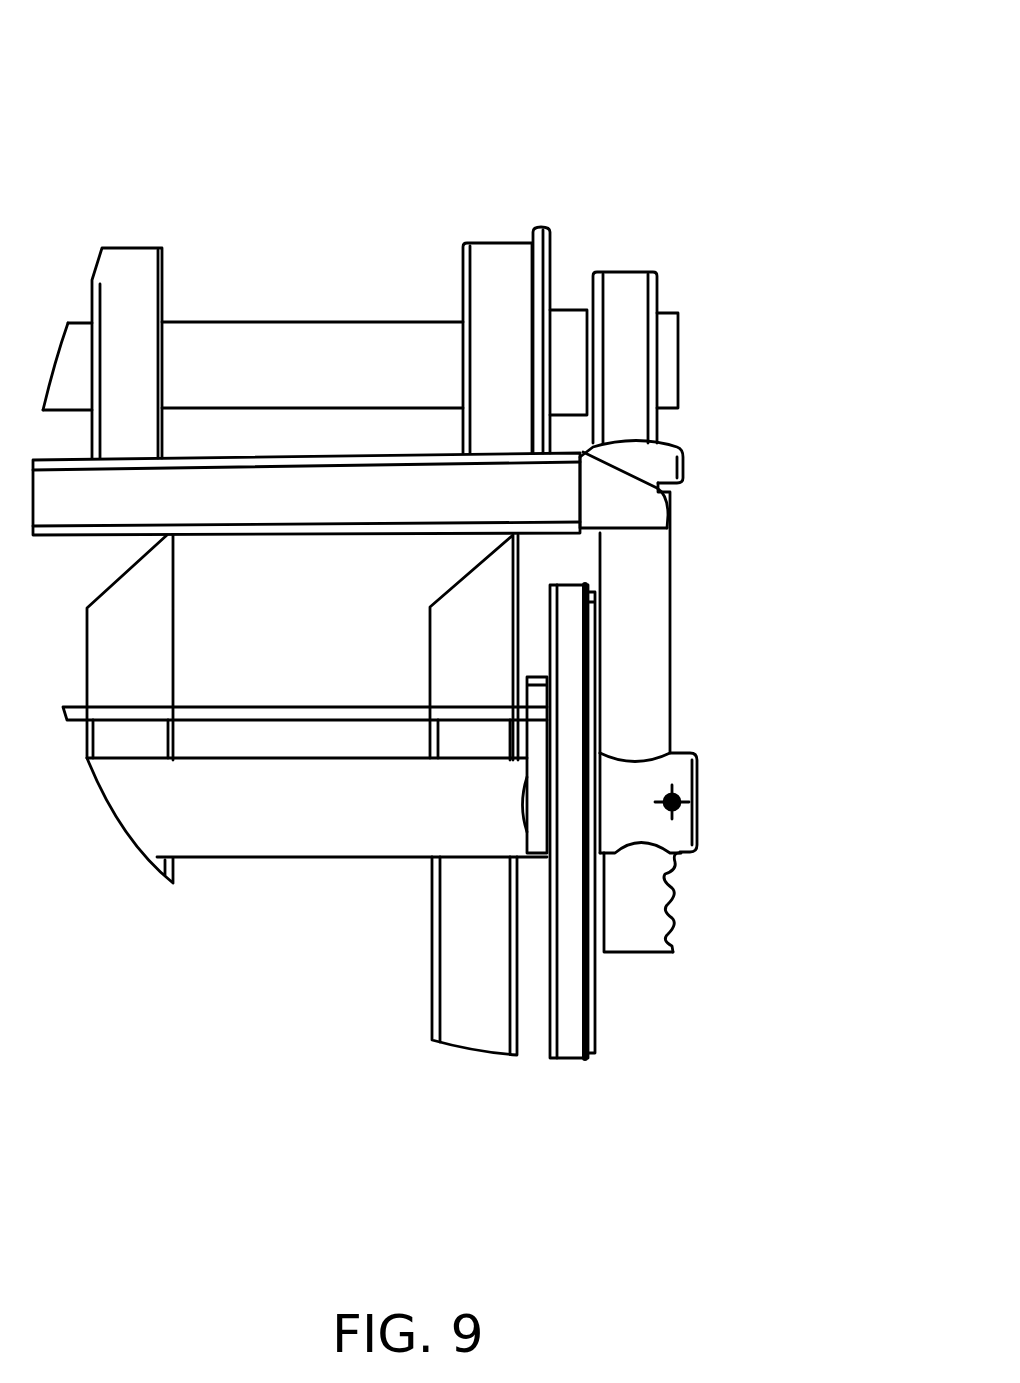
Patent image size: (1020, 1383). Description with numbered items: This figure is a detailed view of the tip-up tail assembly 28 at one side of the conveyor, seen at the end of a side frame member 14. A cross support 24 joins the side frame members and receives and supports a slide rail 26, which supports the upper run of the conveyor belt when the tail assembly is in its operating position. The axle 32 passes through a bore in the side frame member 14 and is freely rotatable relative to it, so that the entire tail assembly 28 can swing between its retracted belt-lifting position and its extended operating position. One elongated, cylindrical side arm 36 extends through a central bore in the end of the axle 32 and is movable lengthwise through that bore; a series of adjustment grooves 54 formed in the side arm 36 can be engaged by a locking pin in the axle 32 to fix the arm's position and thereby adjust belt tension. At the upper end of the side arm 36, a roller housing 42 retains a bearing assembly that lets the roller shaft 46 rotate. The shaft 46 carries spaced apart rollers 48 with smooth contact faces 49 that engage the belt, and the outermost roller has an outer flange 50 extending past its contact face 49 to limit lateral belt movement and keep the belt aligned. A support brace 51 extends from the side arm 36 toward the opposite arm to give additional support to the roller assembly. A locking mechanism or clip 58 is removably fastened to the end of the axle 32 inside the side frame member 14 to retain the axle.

The side frame member 14 is at (597, 1040).
The cross support 24 is at (278, 708).
The slide rail 26 is at (468, 952).
The tip-up tail assembly 28 is at (602, 128).
The axle 32 is at (680, 767).
The side arm 36 is at (643, 668).
The roller housing 42 is at (660, 283).
The roller shaft 46 is at (260, 340).
The roller 48 is at (132, 212).
The smooth contact face 49 is at (487, 267).
The outer flange 50 is at (552, 243).
The support brace 51 is at (548, 477).
The adjustment groove 54 is at (677, 902).
The locking mechanism or clip 58 is at (580, 655).